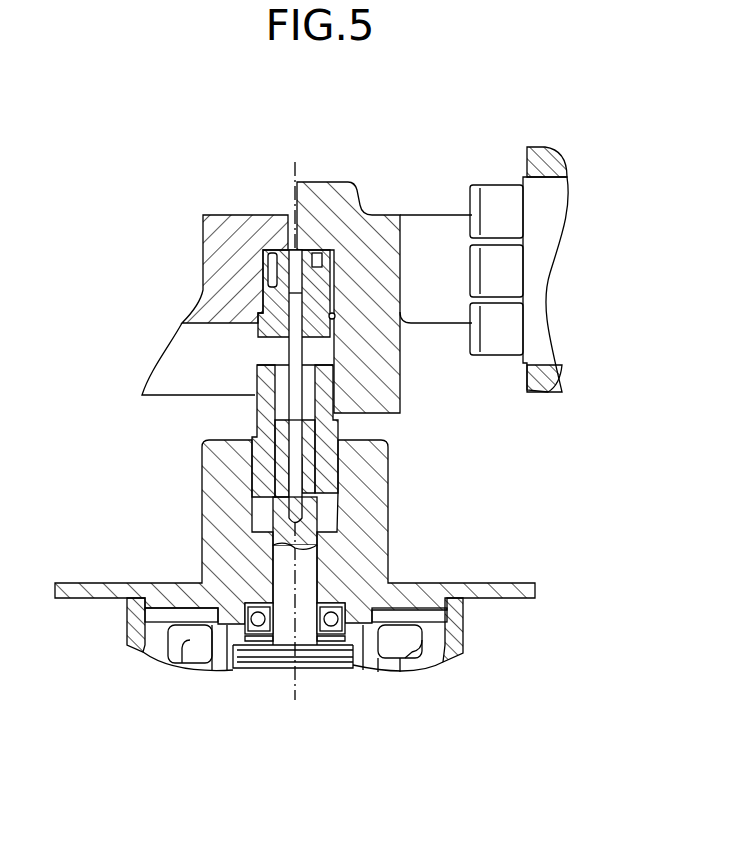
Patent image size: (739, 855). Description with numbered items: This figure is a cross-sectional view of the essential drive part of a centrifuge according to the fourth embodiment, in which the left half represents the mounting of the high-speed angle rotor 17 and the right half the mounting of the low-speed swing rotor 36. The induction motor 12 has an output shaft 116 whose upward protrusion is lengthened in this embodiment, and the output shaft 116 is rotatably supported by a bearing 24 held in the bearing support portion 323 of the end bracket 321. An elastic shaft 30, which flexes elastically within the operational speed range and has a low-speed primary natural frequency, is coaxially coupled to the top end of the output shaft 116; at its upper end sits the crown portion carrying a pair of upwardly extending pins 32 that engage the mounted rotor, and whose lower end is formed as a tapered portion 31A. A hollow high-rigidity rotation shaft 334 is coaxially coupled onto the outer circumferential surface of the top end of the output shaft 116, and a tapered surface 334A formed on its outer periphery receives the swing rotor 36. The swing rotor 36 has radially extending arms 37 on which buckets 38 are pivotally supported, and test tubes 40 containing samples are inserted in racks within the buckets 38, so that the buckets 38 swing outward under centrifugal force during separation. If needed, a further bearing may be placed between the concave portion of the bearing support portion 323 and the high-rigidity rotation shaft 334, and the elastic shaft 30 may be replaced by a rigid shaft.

The induction motor 12 is at (390, 672).
The angle rotor 17 is at (243, 235).
The bearing 24 is at (250, 622).
The elastic shaft 30 is at (337, 427).
The tapered portion 31A is at (335, 316).
The pins 32 is at (263, 268).
The low-speed swing rotor 36 is at (425, 198).
The arms 37 is at (372, 237).
The buckets 38 is at (556, 154).
The test tubes 40 is at (497, 197).
The output shaft 116 is at (305, 572).
The end bracket 321 is at (395, 512).
The bearing support portion 323 is at (218, 536).
The high-rigidity rotation shaft 334 is at (260, 408).
The tapered surface 334A is at (257, 380).